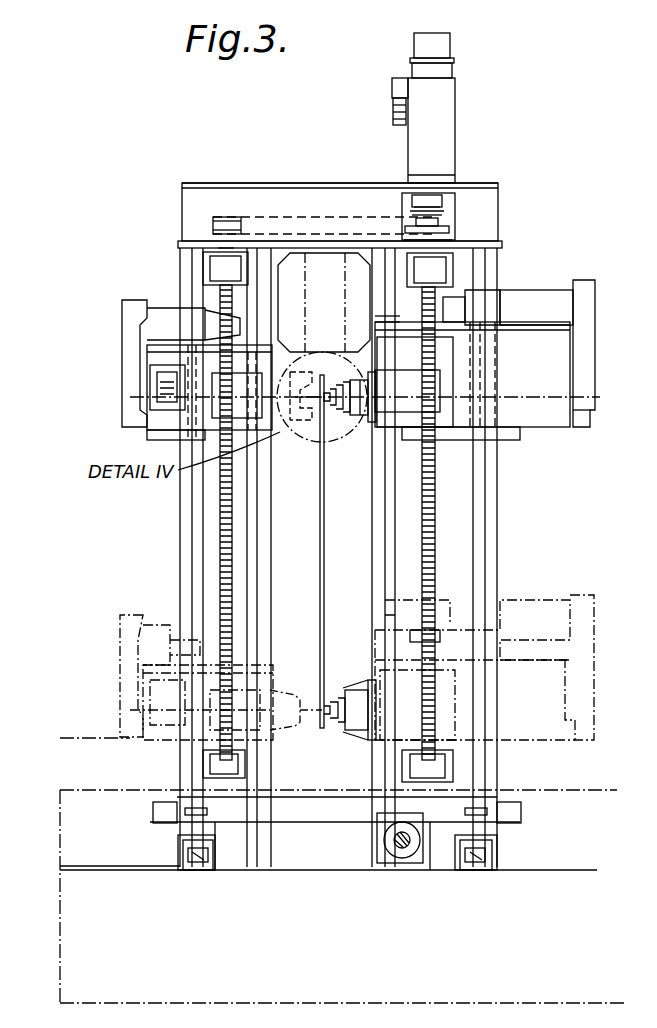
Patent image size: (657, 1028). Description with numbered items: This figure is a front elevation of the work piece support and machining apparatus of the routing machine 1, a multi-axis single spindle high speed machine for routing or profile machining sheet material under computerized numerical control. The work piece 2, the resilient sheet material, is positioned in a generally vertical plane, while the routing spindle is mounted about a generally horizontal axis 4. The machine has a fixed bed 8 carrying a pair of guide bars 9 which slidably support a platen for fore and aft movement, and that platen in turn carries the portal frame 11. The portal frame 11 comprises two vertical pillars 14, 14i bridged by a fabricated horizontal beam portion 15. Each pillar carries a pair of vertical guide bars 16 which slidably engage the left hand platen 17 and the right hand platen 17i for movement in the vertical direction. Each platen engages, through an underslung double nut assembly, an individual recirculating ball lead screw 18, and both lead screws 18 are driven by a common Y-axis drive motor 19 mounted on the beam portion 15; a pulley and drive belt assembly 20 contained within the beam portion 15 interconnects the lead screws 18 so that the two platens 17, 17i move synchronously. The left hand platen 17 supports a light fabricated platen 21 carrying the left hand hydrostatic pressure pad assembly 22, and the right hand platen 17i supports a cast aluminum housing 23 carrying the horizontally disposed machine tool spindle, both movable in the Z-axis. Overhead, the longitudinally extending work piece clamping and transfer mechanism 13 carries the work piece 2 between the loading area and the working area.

The routing machine 1 is at (498, 230).
The work piece 2 is at (318, 548).
The horizontal axis 4 is at (505, 418).
The fixed bed 8 is at (62, 872).
The guide bars 9 is at (195, 872).
The portal frame 11 is at (192, 286).
The work piece clamping and transfer mechanism 13 is at (321, 272).
The vertical pillar 14 is at (180, 528).
The vertical pillar 14i is at (497, 507).
The horizontal beam portion 15 is at (210, 186).
The vertical guide bars 16 is at (248, 568).
The platen 17 is at (150, 422).
The platen 17i is at (560, 430).
The recirculating ball lead screws 18 is at (226, 600).
The Y-axis drive motor 19 is at (455, 66).
The pulley and drive belt assembly 20 is at (358, 230).
The light fabricated platen 21 is at (165, 393).
The left hand hydrostatic pressure pad assembly 22 is at (312, 410).
The cast aluminum housing 23 is at (343, 412).